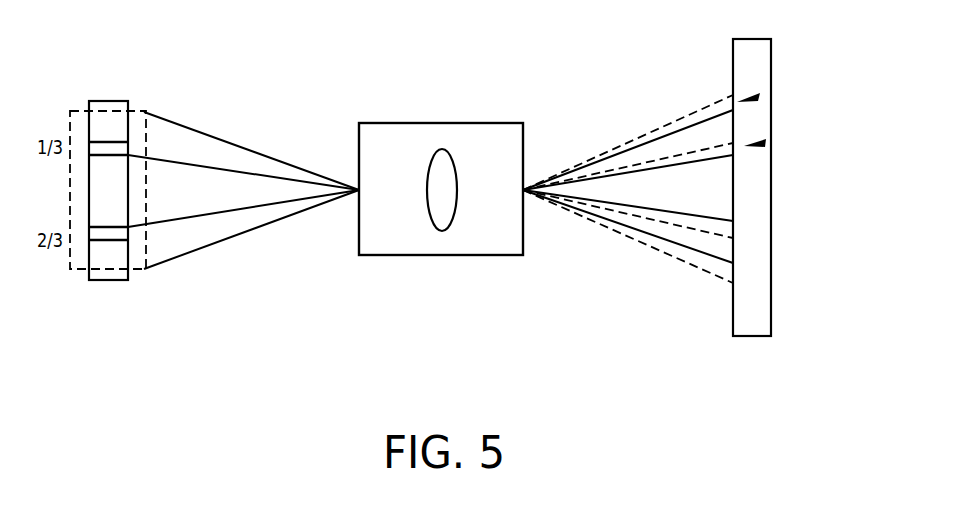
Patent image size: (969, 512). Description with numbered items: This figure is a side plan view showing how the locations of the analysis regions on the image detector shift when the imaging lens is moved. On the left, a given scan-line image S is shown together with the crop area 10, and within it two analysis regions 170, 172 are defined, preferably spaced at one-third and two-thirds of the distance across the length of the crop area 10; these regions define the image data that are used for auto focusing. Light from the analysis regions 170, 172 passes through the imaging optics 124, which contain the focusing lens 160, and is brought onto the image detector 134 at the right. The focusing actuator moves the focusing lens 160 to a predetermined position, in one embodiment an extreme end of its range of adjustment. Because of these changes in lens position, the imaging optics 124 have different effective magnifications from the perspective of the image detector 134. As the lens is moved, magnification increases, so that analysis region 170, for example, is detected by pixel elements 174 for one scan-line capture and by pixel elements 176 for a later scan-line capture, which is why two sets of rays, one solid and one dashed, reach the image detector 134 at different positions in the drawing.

The crop area 10 is at (152, 132).
The scan-line image S is at (108, 280).
The analysis region 170 is at (131, 148).
The analysis region 172 is at (132, 234).
The imaging optics 124 is at (458, 123).
The focusing lens 160 is at (440, 232).
The image detector 134 is at (750, 336).
The pixel elements 174 is at (765, 143).
The pixel elements 176 is at (758, 97).